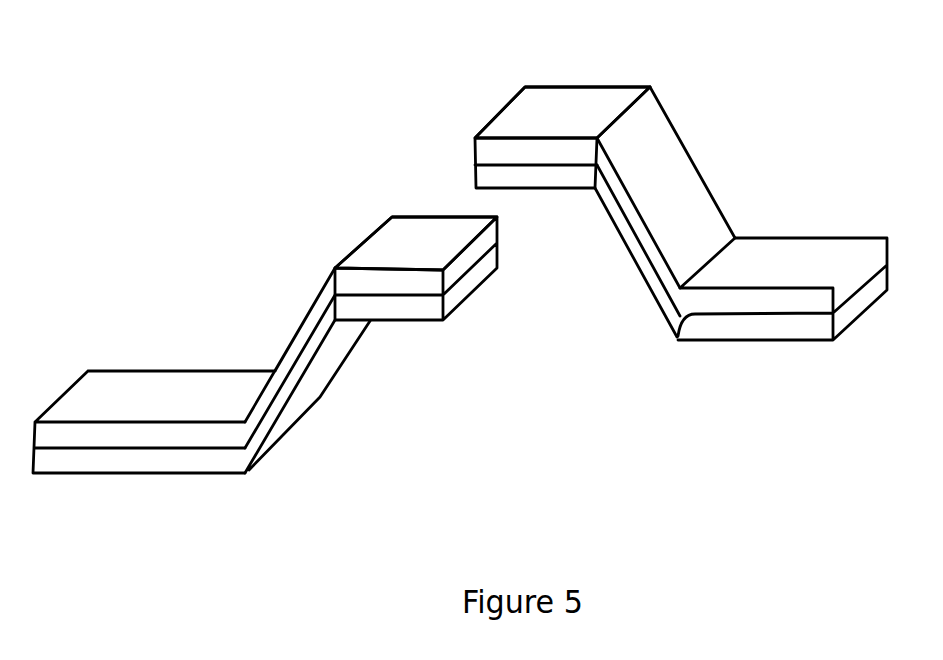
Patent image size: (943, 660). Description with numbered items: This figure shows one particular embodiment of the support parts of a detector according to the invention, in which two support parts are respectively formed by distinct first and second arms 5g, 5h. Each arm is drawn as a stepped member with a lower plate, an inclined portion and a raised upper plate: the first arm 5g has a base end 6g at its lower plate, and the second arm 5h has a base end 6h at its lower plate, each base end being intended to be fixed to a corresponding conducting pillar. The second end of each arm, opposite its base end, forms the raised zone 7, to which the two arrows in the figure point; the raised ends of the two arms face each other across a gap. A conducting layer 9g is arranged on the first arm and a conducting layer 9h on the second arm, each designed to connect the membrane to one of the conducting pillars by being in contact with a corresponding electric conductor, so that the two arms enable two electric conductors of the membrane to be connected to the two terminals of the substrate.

The first arm 5g is at (265, 308).
The second arm 5h is at (681, 218).
The base end of the first arm 6g is at (160, 403).
The base end of the second arm 6h is at (677, 338).
The raised zone 7 is at (439, 132).
The conducting layer 9g is at (308, 304).
The conducting layer 9h is at (697, 175).